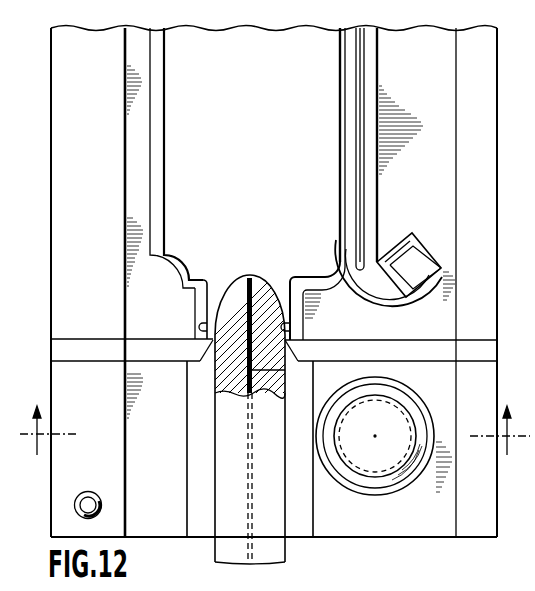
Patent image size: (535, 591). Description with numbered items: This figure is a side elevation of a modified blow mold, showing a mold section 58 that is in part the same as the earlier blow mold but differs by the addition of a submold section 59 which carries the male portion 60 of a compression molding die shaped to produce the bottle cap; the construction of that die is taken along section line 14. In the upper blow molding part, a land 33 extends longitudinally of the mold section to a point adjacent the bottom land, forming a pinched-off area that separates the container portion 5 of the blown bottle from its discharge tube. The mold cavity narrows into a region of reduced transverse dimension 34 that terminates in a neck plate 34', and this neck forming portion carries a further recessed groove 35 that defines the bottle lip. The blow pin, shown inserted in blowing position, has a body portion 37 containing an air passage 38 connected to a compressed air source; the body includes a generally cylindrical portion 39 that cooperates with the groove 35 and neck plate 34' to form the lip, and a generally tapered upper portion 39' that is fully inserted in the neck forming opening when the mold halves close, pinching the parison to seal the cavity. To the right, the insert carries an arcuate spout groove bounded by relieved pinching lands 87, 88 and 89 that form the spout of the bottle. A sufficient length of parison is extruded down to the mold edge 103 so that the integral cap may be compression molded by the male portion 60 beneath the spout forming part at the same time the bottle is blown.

The mold section 58 is at (485, 108).
The submold section 59 is at (482, 507).
The land 33 is at (340, 178).
The reduced transverse dimension region 34 is at (178, 309).
The neck plate 34' is at (274, 361).
The recessed groove 35 is at (297, 326).
The body portion 37 is at (215, 432).
The air passage 38 is at (283, 370).
The cylindrical portion 39 is at (218, 478).
The upper portion 39' is at (341, 317).
The male portion 60 is at (392, 453).
The pinching land 87 is at (392, 300).
The pinching land 88 is at (423, 250).
The pinching land 89 is at (400, 248).
The mold edge 103 is at (384, 522).
The section line 14 is at (276, 442).
The container portion 5 is at (532, 370).